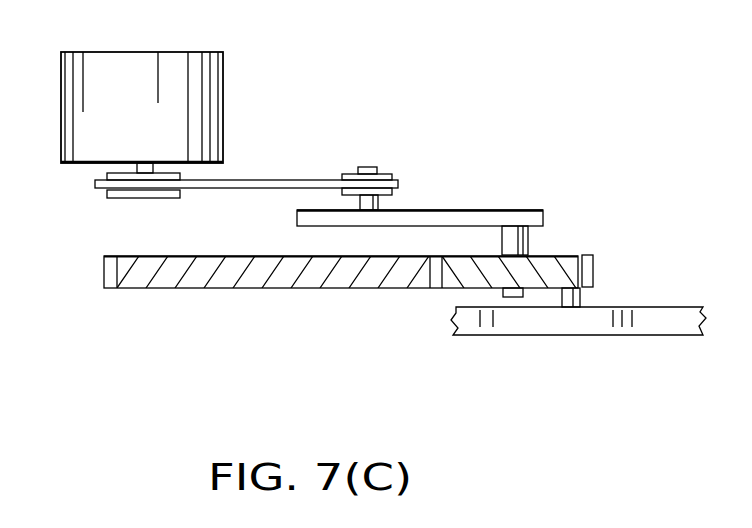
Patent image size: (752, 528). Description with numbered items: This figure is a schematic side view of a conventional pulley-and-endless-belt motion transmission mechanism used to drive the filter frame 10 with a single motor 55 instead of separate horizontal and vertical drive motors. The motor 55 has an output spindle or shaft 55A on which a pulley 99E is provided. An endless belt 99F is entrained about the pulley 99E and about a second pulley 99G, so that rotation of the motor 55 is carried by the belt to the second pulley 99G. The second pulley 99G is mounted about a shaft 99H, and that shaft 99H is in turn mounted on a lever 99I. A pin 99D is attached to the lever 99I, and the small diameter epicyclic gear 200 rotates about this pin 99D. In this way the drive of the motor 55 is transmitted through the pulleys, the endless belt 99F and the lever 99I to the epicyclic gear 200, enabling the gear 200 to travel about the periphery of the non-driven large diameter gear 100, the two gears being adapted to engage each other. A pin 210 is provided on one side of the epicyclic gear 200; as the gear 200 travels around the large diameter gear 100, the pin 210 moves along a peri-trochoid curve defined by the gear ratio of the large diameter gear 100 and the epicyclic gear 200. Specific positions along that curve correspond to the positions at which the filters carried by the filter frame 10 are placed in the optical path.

The motor 55 is at (223, 83).
The shaft 55A is at (107, 171).
The pulley 99E is at (117, 198).
The endless belt 99F is at (252, 179).
The second pulley 99G is at (345, 174).
The shaft 99H is at (368, 167).
The lever 99I is at (418, 210).
The pin 99D is at (528, 242).
The large diameter gear 100 is at (346, 290).
The epicyclic gear 200 is at (572, 256).
The pin 210 is at (583, 297).
The filter frame 10 is at (642, 307).